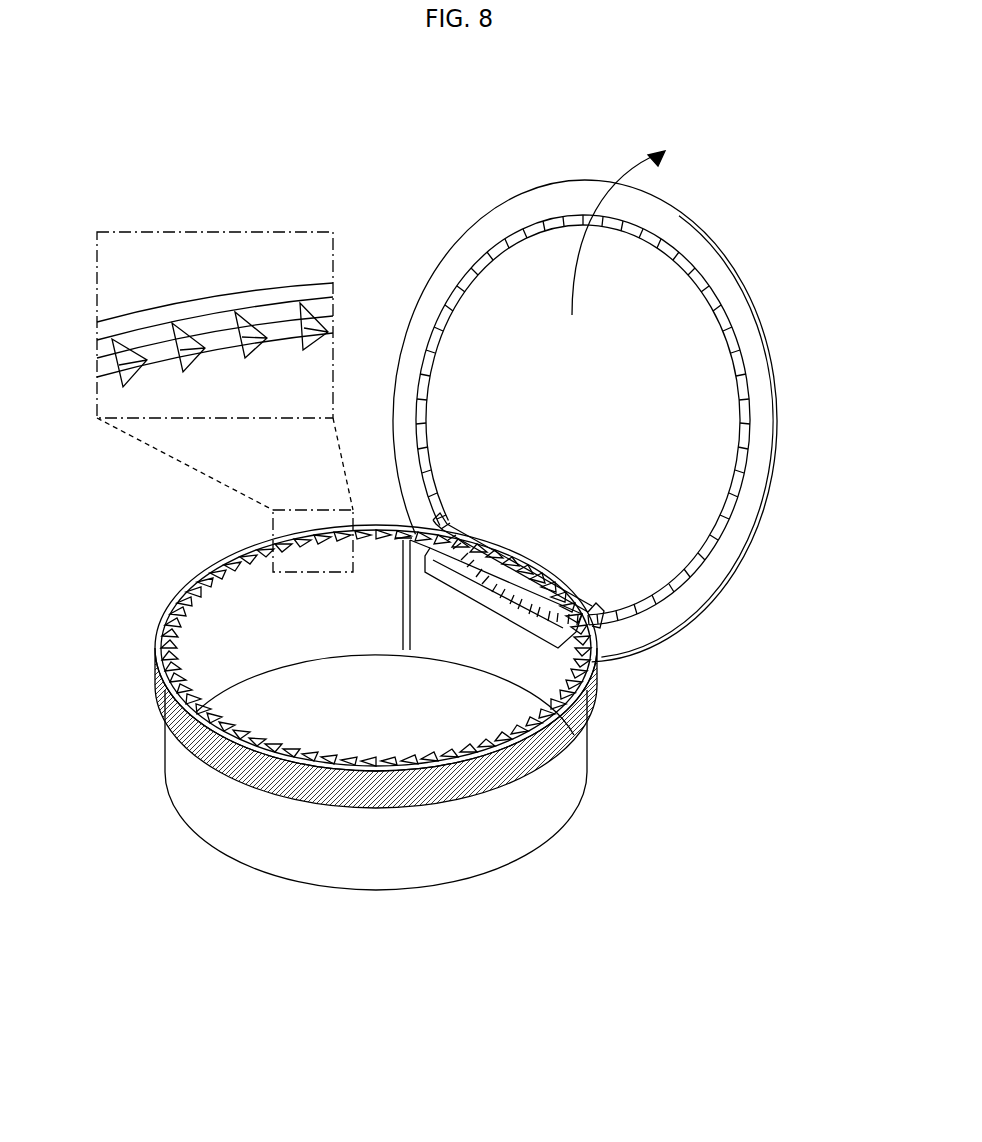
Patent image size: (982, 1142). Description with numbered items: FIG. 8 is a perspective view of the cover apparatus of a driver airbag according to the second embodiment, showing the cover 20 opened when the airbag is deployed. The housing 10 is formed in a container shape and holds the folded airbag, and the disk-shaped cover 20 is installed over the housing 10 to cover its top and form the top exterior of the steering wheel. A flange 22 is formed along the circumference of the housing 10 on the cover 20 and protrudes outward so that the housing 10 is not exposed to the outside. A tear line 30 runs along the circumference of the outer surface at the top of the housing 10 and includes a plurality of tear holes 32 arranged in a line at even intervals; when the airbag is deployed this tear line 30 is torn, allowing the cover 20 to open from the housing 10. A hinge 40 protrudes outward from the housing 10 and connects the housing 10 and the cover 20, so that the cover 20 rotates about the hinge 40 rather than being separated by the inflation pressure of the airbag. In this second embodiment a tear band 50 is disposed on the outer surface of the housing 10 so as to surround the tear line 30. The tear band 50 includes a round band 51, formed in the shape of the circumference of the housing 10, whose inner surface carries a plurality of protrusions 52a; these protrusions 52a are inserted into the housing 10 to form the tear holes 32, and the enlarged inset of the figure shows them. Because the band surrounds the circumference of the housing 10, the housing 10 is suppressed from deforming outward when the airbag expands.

The housing 10 is at (537, 800).
The cover 20 is at (762, 272).
The flange 22 is at (762, 367).
The tear line 30 is at (653, 617).
The tear holes 32 is at (137, 380).
The hinge 40 is at (522, 608).
The tear band 50 is at (338, 800).
The round band 51 is at (198, 743).
The protrusions 52a is at (253, 313).